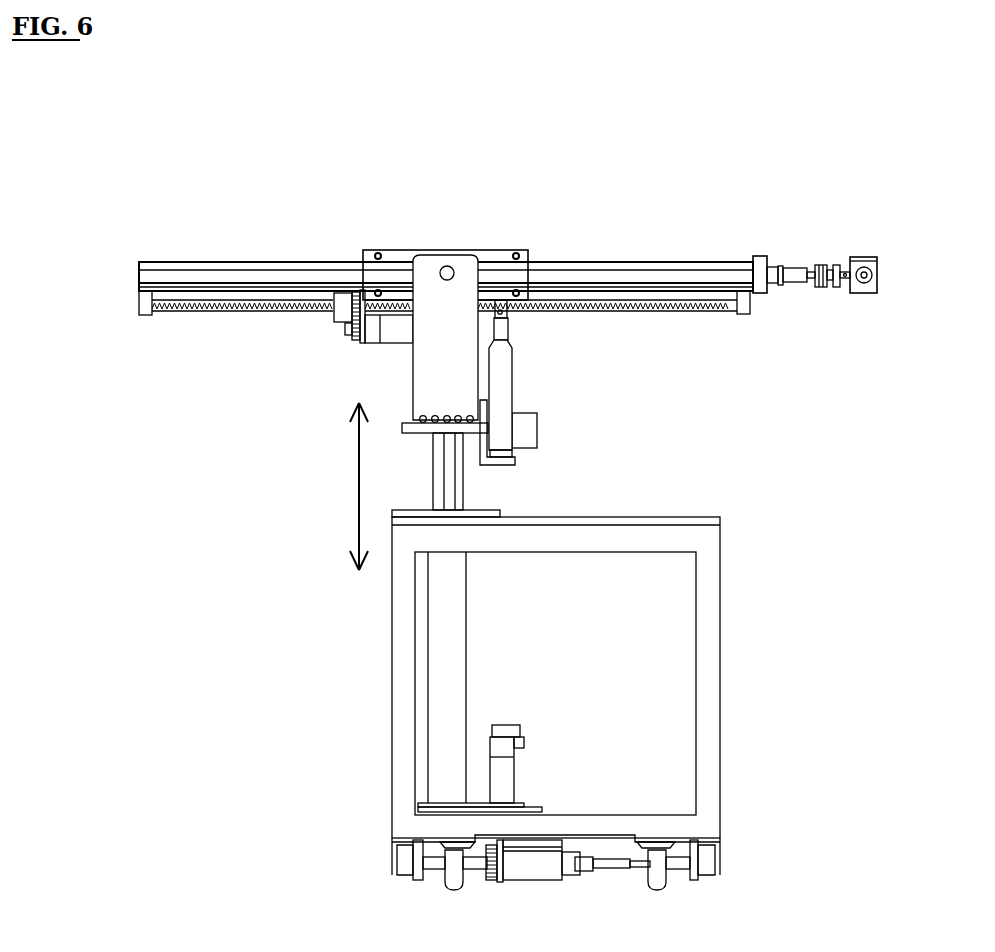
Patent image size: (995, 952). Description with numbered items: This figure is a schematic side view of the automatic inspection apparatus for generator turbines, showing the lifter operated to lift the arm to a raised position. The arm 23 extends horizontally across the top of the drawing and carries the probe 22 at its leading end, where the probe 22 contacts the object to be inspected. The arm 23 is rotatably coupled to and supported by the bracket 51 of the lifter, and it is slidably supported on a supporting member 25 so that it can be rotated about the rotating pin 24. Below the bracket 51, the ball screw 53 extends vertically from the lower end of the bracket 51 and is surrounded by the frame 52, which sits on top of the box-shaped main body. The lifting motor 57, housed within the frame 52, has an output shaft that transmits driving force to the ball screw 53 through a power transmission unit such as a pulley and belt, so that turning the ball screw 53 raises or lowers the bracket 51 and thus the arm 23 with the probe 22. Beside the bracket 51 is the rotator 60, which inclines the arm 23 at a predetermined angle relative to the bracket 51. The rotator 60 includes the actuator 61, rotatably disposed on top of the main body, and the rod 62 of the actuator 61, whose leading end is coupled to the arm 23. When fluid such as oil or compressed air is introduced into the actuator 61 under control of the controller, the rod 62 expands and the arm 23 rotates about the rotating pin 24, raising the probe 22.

The probe 22 is at (866, 262).
The arm 23 is at (667, 260).
The rotating pin 24 is at (447, 266).
The supporting member 25 is at (497, 262).
The bracket 51 is at (388, 285).
The frame 52 is at (442, 755).
The ball screw 53 is at (437, 485).
The lifting motor 57 is at (486, 788).
The rotator 60 is at (614, 368).
The actuator 61 is at (505, 378).
The rod 62 is at (507, 330).